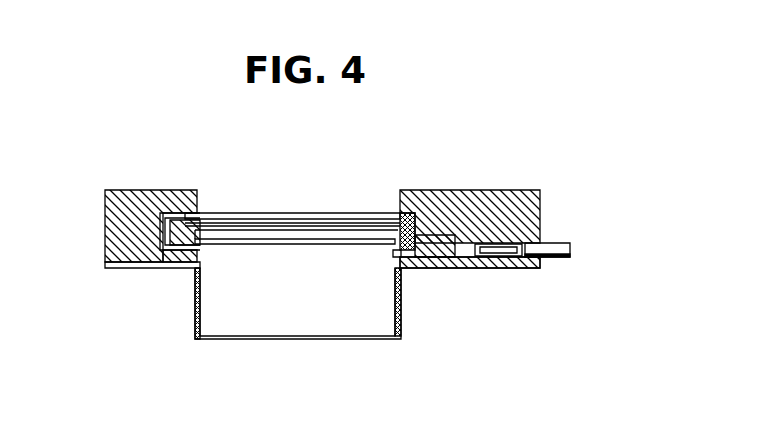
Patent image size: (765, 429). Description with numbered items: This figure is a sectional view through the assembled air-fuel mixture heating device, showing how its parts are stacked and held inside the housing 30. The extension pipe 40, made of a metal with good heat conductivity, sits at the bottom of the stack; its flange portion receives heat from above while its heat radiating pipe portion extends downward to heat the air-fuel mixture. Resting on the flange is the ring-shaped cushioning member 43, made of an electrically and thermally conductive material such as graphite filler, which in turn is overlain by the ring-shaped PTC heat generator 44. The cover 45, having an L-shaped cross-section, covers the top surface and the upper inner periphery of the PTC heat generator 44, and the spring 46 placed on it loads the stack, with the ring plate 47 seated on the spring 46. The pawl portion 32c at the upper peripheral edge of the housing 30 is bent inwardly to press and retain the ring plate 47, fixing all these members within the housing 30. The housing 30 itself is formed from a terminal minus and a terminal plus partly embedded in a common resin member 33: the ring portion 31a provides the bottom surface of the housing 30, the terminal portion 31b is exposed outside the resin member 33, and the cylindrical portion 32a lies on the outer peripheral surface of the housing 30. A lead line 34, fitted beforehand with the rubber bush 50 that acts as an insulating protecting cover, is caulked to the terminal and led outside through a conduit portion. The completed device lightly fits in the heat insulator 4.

The heat insulator 4 is at (515, 193).
The housing 30 is at (388, 256).
The ring portion 31a is at (181, 264).
The terminal portion 31b is at (483, 268).
The cylindrical portion 32a is at (150, 263).
The pawl portion 32c is at (266, 212).
The resin member 33 is at (417, 268).
The lead line 34 is at (561, 258).
The extension pipe 40 is at (195, 303).
The cushioning member 43 is at (312, 244).
The PTC heat generator 44 is at (214, 248).
The cover 45 is at (376, 222).
The spring 46 is at (184, 212).
The ring plate 47 is at (401, 212).
The rubber bush 50 is at (535, 268).